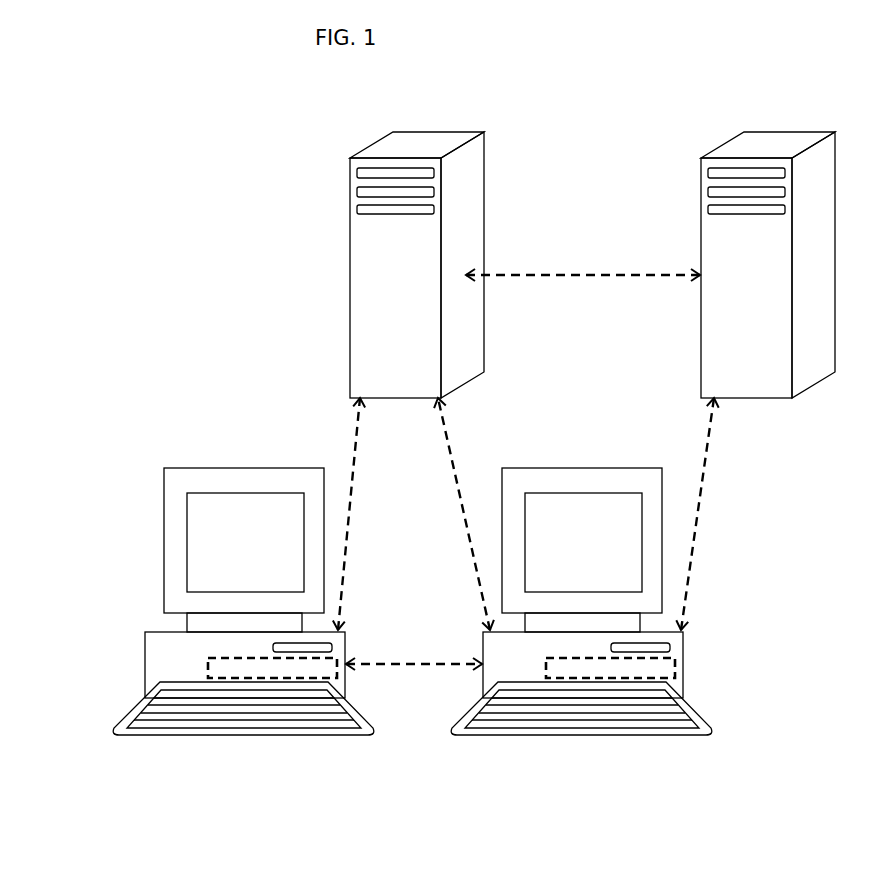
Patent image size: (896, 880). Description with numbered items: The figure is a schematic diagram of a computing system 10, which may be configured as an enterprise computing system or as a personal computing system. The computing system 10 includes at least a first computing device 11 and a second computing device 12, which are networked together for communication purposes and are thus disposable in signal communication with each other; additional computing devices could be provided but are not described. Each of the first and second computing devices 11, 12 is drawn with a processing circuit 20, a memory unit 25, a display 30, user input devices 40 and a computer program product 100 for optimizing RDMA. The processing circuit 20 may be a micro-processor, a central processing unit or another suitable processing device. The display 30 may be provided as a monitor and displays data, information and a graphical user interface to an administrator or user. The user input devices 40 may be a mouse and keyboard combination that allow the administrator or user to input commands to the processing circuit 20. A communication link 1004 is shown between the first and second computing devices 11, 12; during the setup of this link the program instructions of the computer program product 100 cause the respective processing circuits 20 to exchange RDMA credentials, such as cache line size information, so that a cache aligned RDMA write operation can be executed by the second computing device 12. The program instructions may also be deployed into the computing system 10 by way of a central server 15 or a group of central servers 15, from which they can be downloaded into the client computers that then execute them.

The computing system 10 is at (250, 298).
The first computing device 11 is at (145, 735).
The second computing device 12 is at (535, 733).
The central server 15 is at (387, 153).
The processing circuit 20 is at (192, 663).
The memory unit 25 is at (217, 678).
The display 30 is at (177, 488).
The user input devices 40 is at (482, 638).
The computer program product 100 is at (275, 648).
The communication link 1004 is at (419, 662).